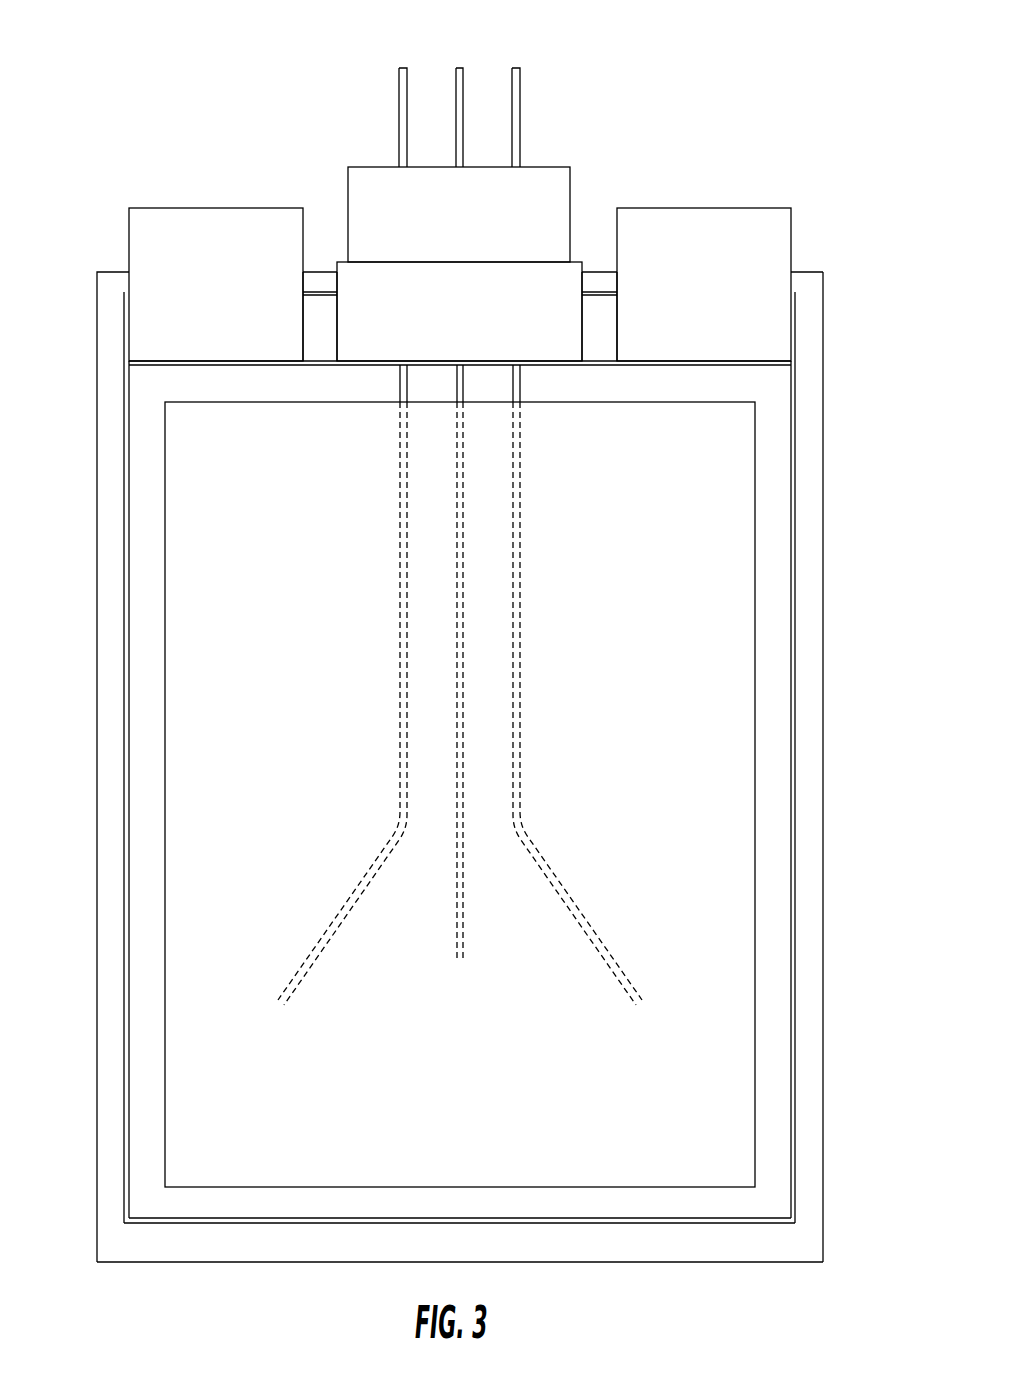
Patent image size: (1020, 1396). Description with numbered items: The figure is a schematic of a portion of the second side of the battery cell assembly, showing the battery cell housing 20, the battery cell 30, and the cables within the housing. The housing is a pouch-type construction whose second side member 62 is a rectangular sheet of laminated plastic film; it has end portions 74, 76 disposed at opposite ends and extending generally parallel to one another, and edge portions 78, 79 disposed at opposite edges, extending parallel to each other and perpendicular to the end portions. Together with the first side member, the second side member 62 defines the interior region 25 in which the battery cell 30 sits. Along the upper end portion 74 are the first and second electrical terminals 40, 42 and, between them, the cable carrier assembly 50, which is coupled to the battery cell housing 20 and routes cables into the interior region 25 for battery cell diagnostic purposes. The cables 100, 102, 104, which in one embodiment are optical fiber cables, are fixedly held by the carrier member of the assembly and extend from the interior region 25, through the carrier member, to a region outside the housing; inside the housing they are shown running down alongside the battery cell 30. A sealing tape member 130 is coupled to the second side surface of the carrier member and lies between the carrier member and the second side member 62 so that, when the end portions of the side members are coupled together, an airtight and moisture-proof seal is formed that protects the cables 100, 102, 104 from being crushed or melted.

The battery cell housing 20 is at (836, 539).
The interior region 25 is at (772, 478).
The battery cell 30 is at (673, 400).
The first electrical terminal 40 is at (691, 208).
The second electrical terminal 42 is at (218, 210).
The cable carrier assembly 50 is at (571, 156).
The second side member 62 is at (800, 395).
The end portion 74 is at (591, 283).
The end portion 76 is at (217, 1248).
The edge portion 78 is at (808, 665).
The edge portion 79 is at (113, 733).
The cable 100 is at (516, 68).
The cable 102 is at (460, 68).
The cable 104 is at (403, 68).
The sealing tape member 130 is at (540, 288).